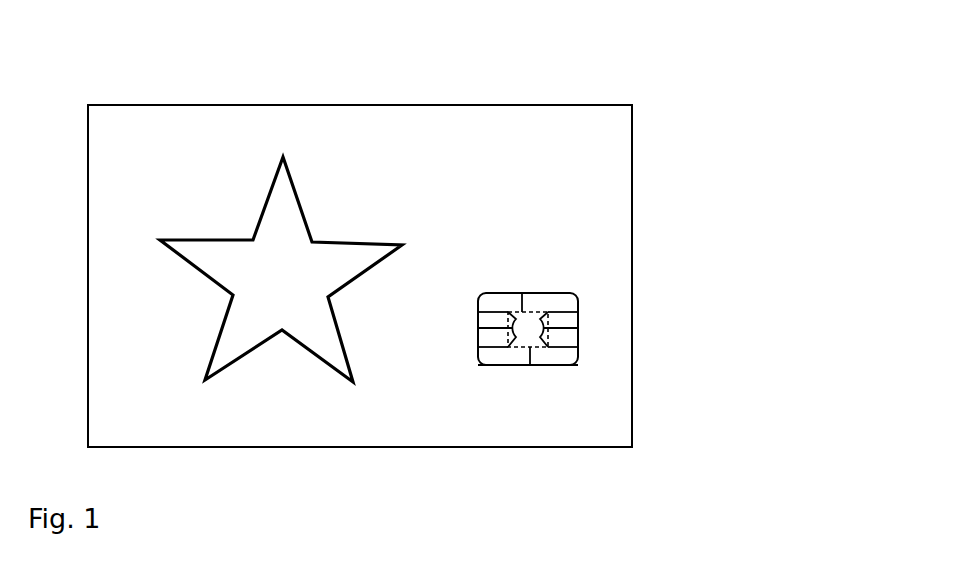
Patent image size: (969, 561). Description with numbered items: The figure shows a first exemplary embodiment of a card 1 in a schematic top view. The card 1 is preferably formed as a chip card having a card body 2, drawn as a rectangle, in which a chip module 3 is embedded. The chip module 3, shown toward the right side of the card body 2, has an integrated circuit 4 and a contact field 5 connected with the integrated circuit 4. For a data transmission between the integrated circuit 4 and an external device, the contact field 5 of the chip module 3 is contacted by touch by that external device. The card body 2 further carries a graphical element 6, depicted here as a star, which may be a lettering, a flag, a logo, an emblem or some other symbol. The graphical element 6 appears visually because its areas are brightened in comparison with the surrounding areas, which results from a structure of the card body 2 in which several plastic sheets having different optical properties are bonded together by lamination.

The card 1 is at (462, 103).
The card body 2 is at (223, 100).
The chip module 3 is at (584, 291).
The integrated circuit 4 is at (555, 322).
The contact field 5 is at (583, 355).
The graphical element 6 is at (292, 163).